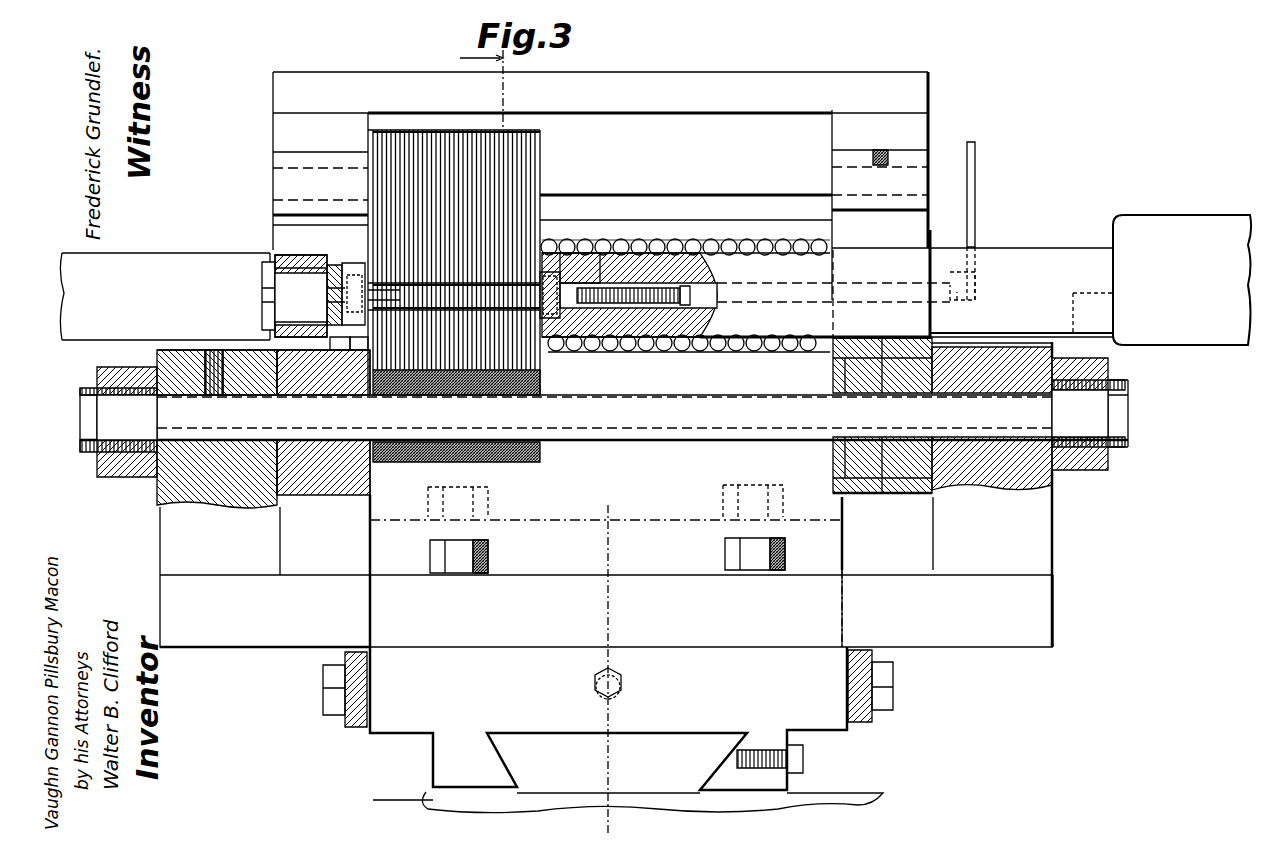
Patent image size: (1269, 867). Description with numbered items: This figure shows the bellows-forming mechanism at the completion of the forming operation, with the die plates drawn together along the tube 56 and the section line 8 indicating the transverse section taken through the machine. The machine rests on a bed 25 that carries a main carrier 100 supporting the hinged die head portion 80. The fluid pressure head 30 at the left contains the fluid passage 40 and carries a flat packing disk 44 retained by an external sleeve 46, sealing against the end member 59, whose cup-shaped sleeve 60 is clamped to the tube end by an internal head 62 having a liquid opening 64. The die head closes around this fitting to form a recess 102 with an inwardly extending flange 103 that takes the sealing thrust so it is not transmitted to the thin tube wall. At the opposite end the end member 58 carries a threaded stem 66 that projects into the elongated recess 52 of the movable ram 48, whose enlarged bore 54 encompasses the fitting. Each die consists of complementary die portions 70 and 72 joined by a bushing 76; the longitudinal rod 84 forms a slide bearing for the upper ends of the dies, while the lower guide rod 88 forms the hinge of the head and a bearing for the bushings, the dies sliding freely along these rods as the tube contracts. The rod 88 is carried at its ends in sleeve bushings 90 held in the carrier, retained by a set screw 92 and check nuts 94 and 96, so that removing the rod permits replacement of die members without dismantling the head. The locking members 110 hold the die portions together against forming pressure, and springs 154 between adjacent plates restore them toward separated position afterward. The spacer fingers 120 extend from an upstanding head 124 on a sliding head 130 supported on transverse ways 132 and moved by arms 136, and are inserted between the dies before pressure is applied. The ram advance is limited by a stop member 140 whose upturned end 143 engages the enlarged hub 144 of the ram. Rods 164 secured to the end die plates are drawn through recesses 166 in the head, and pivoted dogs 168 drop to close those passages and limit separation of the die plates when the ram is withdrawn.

The section line 8- 8 is at (540, 442).
The bed 25 is at (395, 800).
The fluid pressure head 30 is at (125, 258).
The fluid passage 40 is at (262, 300).
The flat packing disk 44 is at (270, 262).
The external sleeve 46 is at (290, 256).
The movable ram 48 is at (640, 245).
The elongated recess 52 is at (655, 352).
The enlarged bore 54 is at (580, 240).
The tube 56 is at (425, 285).
The end member 58 is at (555, 272).
The end member 59 is at (350, 278).
The cup-shaped sleeve 60 is at (585, 258).
The internal head 62 is at (575, 345).
The liquid opening 64 is at (330, 268).
The threaded stem 66 is at (690, 293).
The die portion 70 is at (533, 185).
The die portion 72 is at (545, 470).
The bushing 76 is at (542, 448).
The die head portion 80 is at (918, 78).
The longitudinal rod 84 is at (728, 172).
The lower guide rod 88 is at (715, 433).
The sleeve bushing 90 is at (850, 380).
The set screw 92 is at (155, 347).
The check nut 94 is at (1095, 470).
The check nut 96 is at (125, 478).
The main carrier 100 is at (1053, 590).
The recess 102 is at (320, 345).
The inwardly extending flange 103 is at (385, 290).
The locking member 110 is at (540, 140).
The spacer finger 120 is at (747, 240).
The upstanding head 124 is at (378, 525).
The sliding head 130 is at (355, 688).
The transverse ways 132 is at (675, 760).
The arm 136 is at (340, 668).
The stop member 140 is at (1050, 340).
The upturned end 143 is at (1095, 301).
The enlarged hub 144 is at (1182, 205).
The spring 154 is at (495, 330).
The rod 164 is at (870, 283).
The recess 166 is at (975, 292).
The pivoted dog 168 is at (975, 170).